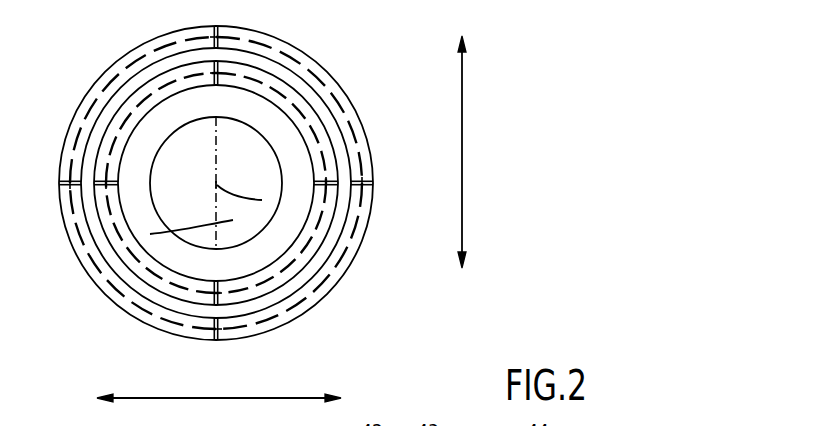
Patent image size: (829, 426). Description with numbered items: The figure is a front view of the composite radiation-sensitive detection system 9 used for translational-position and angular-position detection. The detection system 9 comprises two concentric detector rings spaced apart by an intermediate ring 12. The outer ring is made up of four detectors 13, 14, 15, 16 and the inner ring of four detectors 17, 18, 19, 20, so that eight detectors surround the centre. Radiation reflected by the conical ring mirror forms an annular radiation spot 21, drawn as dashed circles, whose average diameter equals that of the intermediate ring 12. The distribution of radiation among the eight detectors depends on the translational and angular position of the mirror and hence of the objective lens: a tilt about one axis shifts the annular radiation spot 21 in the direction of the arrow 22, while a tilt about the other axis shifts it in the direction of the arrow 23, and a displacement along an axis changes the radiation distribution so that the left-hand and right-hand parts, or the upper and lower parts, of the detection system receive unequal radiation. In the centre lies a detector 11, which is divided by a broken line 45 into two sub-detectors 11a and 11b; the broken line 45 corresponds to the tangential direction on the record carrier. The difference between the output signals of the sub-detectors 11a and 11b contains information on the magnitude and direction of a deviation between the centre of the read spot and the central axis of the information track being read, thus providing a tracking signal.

The radiation-sensitive detection system 9 is at (130, 15).
The detector 11 is at (153, 196).
The sub-detector 11a is at (182, 153).
The sub-detector 11b is at (150, 234).
The intermediate ring 12 is at (343, 165).
The detector 13 is at (313, 71).
The detector 14 is at (112, 73).
The detector 15 is at (118, 305).
The detector 16 is at (327, 292).
The detector 17 is at (323, 145).
The detector 18 is at (123, 120).
The detector 19 is at (133, 248).
The detector 20 is at (322, 233).
The annular radiation spot 21 is at (322, 122).
The arrow 22 is at (465, 162).
The arrow 23 is at (236, 398).
The broken line 45 is at (262, 200).